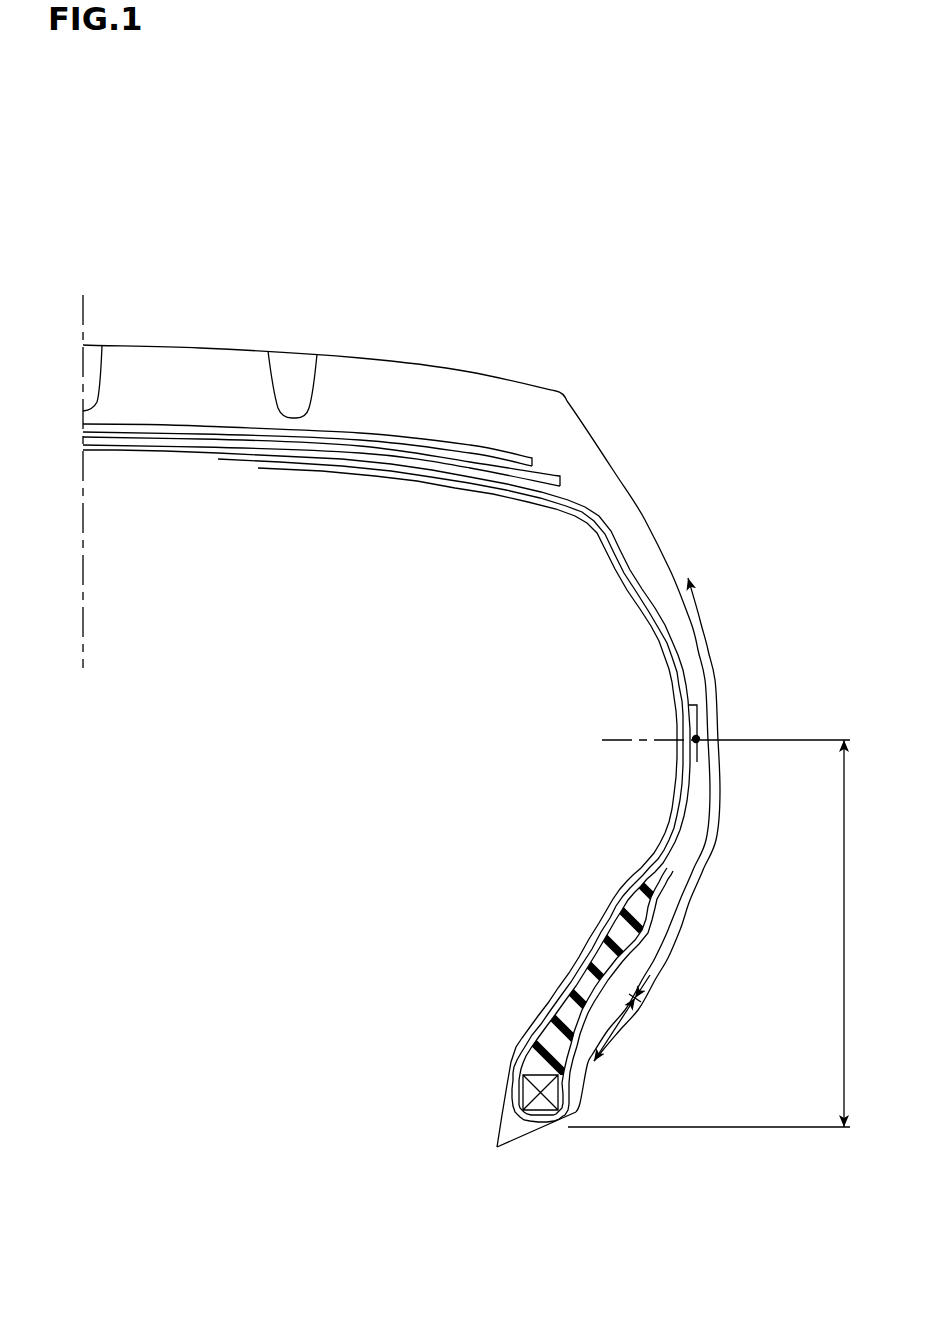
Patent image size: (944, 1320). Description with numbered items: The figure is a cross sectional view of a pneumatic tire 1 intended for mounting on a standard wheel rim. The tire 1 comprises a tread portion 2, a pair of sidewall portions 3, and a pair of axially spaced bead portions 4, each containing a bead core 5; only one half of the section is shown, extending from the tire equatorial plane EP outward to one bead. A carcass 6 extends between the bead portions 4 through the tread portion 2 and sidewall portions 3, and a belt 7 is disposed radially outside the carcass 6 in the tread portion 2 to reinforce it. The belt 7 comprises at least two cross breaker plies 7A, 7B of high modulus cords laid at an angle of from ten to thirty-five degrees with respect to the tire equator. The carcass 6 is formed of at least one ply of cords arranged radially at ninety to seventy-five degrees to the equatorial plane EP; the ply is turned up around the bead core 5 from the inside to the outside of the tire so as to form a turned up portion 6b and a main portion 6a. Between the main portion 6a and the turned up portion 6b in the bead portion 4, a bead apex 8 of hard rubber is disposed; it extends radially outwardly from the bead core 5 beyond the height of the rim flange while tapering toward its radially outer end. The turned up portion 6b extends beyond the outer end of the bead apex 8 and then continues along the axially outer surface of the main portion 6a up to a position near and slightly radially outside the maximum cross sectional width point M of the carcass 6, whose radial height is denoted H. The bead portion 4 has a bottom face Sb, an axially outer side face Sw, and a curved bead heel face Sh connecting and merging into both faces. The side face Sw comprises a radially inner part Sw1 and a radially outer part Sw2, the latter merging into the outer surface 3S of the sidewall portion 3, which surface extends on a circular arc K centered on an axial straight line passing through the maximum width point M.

The pneumatic tire 1 is at (677, 386).
The tread portion 2 is at (405, 352).
The sidewall portion 3 is at (722, 627).
The outer surface of the sidewall portion 3S is at (669, 933).
The bead portion 4 is at (492, 1060).
The bead core 5 is at (530, 1092).
The carcass 6 is at (393, 798).
The main portion 6a is at (675, 645).
The turned up portion 6b is at (697, 762).
The belt 7 is at (321, 538).
The breaker ply 7A is at (309, 444).
The breaker ply 7B is at (236, 434).
The bead apex 8 is at (565, 962).
The tire equatorial plane EP is at (85, 501).
The maximum cross sectional width point M is at (702, 736).
The circular arc K is at (691, 901).
The height of the maximum cross sectional width point H is at (710, 933).
The axially outer side face Sw is at (696, 1037).
The radially inner part of the axially outer side face Sw1 is at (593, 1074).
The radially outer part of the axially outer side face Sw2 is at (610, 1030).
The bead heel face Sh is at (583, 1111).
The bottom face Sb is at (530, 1136).